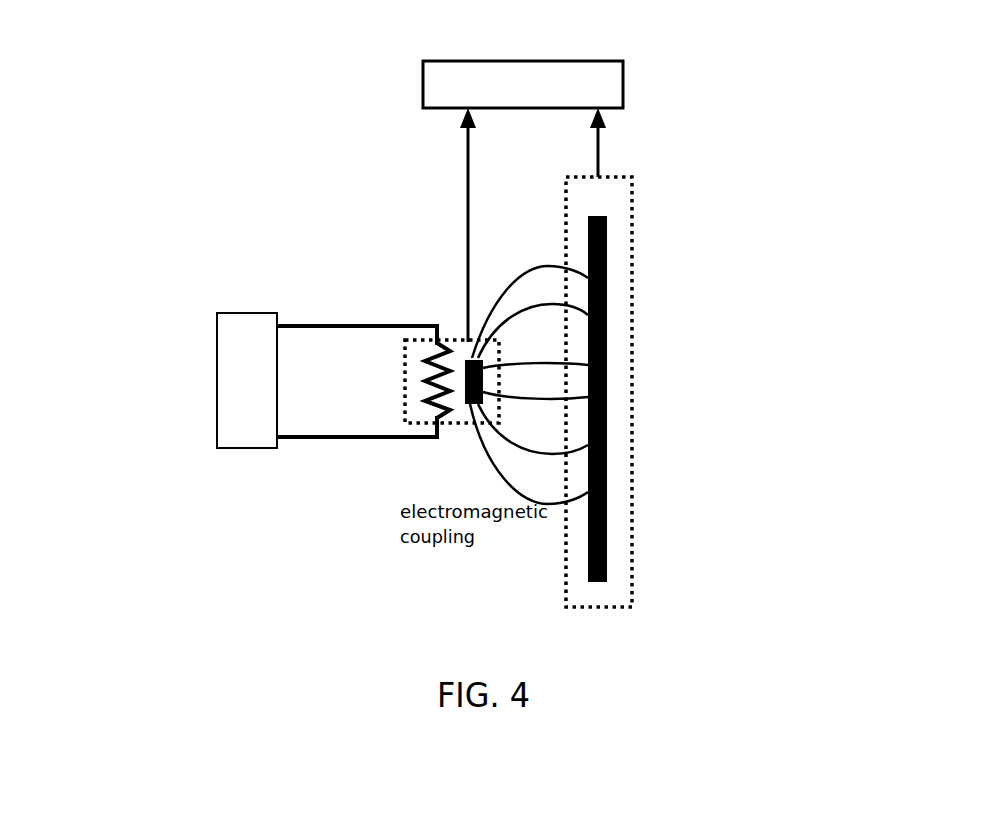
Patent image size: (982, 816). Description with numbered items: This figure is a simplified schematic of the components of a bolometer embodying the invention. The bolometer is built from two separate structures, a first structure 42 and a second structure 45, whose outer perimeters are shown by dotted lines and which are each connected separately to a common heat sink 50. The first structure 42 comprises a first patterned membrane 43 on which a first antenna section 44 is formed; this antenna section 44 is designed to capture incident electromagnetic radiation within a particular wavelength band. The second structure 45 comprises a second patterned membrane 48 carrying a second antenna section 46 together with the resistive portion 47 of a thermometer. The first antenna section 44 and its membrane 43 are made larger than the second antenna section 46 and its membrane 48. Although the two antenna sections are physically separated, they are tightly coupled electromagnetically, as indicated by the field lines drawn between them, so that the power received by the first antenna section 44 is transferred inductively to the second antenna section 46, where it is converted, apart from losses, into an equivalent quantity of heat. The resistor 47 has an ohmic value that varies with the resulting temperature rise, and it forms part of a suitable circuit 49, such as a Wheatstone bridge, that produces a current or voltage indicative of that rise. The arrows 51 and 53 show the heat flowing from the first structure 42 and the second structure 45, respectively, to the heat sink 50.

The first structure 42 is at (708, 417).
The first patterned membrane 43 is at (632, 417).
The first antenna section 44 is at (727, 394).
The second structure 45 is at (353, 411).
The second antenna section 46 is at (309, 320).
The resistive portion of a thermometer 47 is at (321, 423).
The second patterned membrane 48 is at (391, 378).
The circuit 49 is at (141, 385).
The heat sink 50 is at (566, 60).
The arrow showing heat flow from first structure 51 is at (603, 153).
The arrow showing heat flow from second structure 53 is at (475, 167).